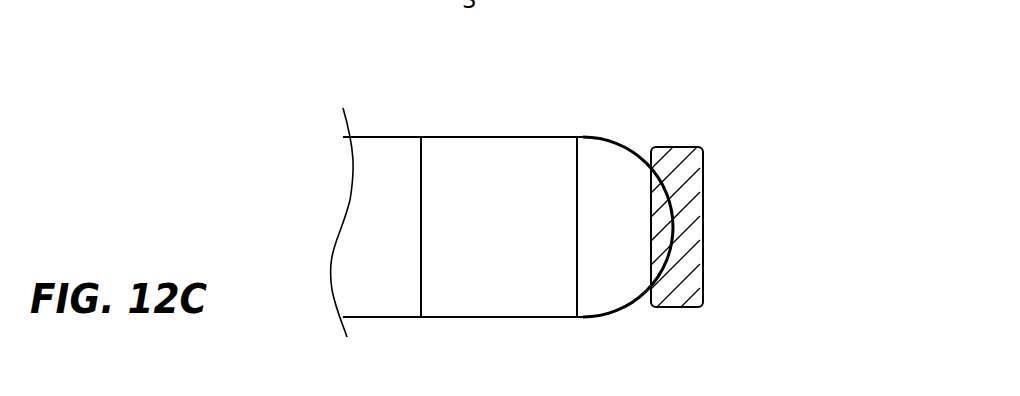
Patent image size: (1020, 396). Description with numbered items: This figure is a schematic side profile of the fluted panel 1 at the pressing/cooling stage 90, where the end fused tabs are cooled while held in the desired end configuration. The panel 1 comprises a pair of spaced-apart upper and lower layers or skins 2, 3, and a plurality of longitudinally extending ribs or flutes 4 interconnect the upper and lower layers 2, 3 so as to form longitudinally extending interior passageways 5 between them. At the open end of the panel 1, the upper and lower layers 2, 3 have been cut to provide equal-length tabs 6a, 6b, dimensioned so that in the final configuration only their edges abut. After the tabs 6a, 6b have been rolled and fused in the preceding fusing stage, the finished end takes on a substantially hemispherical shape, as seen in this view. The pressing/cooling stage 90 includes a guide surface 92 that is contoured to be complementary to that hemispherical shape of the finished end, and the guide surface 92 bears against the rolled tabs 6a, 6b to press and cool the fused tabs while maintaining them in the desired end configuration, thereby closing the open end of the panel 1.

The panel 1 is at (466, 111).
The upper layer 2 is at (508, 136).
The lower layer 3 is at (492, 318).
The flutes 4 is at (577, 190).
The interior passageways 5 is at (490, 247).
The tab 6a is at (623, 148).
The tab 6b is at (630, 314).
The pressing/cooling stage 90 is at (699, 134).
The guide surface 92 is at (662, 205).